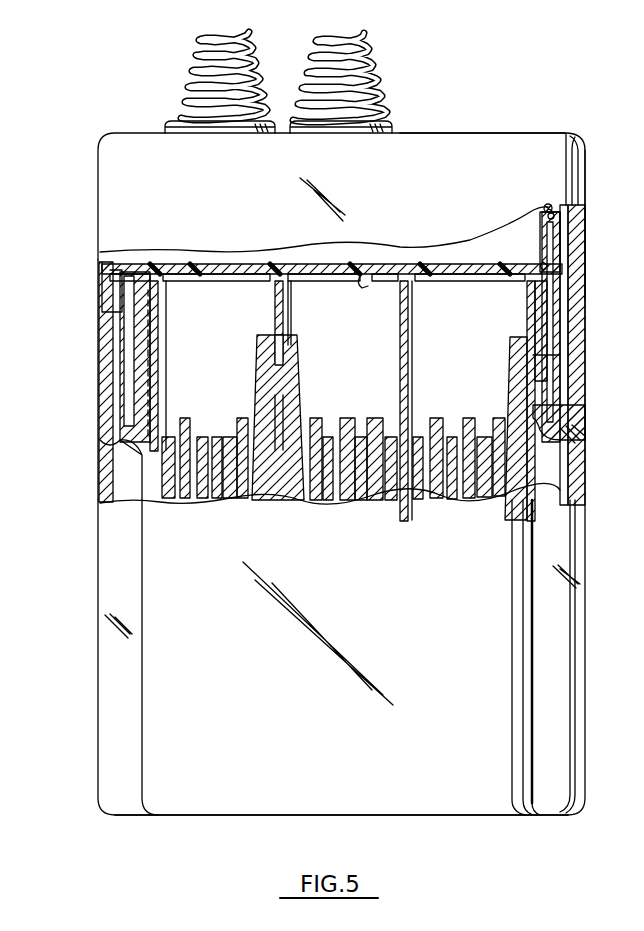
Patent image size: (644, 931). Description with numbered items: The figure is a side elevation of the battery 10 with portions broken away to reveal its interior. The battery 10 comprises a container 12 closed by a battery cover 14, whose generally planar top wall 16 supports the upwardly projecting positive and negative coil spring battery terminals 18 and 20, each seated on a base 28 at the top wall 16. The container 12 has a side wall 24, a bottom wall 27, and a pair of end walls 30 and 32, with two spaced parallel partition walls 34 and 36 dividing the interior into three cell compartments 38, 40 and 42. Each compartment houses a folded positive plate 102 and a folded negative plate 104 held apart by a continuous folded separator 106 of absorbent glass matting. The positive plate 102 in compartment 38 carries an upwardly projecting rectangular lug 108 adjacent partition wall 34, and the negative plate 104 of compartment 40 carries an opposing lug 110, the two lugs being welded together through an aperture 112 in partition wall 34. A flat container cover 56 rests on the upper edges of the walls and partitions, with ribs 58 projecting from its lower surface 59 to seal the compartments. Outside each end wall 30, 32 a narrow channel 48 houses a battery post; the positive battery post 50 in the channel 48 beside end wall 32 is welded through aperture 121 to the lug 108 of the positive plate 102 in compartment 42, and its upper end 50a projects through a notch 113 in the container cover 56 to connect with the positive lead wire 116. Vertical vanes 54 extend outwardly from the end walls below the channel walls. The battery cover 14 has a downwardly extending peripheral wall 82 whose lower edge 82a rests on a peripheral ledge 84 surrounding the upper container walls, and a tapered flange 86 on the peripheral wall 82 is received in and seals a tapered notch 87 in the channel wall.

The battery 10 is at (512, 99).
The container 12 is at (96, 590).
The battery cover 14 is at (590, 146).
The top wall 16 is at (541, 131).
The positive coil spring battery terminal 18 is at (200, 31).
The negative coil spring battery terminal 20 is at (372, 64).
The side wall 24 is at (318, 645).
The bottom wall 27 is at (455, 822).
The terminal base 28 is at (178, 121).
The end wall 30 is at (162, 322).
The end wall 32 is at (526, 298).
The partition wall 34 is at (292, 302).
The partition wall 36 is at (412, 297).
The cell compartment 38 is at (172, 360).
The cell compartment 40 is at (335, 334).
The cell compartment 42 is at (445, 330).
The channel 48 is at (128, 352).
The positive battery post 50 is at (560, 226).
The upper end of positive battery post 50a is at (556, 224).
The vertical vane 54 is at (110, 628).
The container cover 56 is at (415, 263).
The rib 58 is at (266, 283).
The lower surface 59 is at (364, 287).
The peripheral wall 82 is at (98, 160).
The lower edge of peripheral wall 82a is at (101, 316).
The peripheral ledge 84 is at (586, 240).
The tapered flange 86 is at (578, 333).
The tapered notch 87 is at (585, 413).
The positive plate 102 is at (255, 500).
The negative plate 104 is at (285, 432).
The separator 106 is at (186, 418).
The lug 108 is at (258, 341).
The lug 110 is at (298, 345).
The aperture 112 is at (268, 365).
The notch 113 is at (543, 264).
The positive lead wire 116 is at (543, 207).
The aperture 121 is at (532, 361).